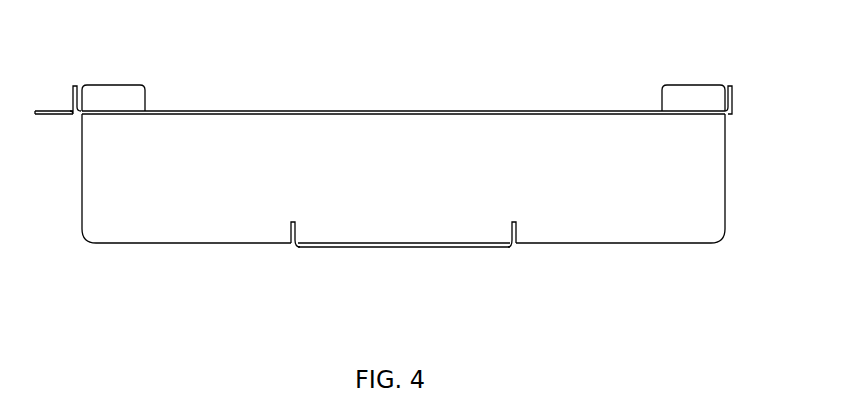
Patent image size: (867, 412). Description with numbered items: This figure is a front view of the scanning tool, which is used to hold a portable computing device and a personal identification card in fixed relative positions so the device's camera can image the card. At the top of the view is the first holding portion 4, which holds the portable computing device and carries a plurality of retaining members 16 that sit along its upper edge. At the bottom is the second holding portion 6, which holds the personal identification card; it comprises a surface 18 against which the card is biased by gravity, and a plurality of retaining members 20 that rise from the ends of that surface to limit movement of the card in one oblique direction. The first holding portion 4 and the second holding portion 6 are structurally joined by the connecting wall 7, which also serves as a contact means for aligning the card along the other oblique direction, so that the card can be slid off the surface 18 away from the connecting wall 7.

The first holding portion 4 is at (693, 100).
The retaining members 16 is at (115, 100).
The surface 18 is at (403, 242).
The connecting wall 7 is at (133, 207).
The second holding portion 6 is at (377, 245).
The retaining members 20 is at (288, 227).